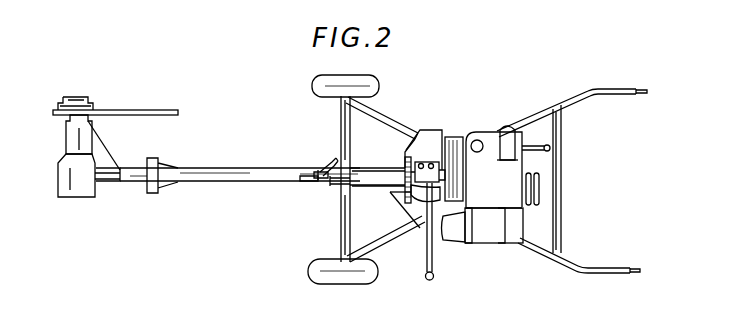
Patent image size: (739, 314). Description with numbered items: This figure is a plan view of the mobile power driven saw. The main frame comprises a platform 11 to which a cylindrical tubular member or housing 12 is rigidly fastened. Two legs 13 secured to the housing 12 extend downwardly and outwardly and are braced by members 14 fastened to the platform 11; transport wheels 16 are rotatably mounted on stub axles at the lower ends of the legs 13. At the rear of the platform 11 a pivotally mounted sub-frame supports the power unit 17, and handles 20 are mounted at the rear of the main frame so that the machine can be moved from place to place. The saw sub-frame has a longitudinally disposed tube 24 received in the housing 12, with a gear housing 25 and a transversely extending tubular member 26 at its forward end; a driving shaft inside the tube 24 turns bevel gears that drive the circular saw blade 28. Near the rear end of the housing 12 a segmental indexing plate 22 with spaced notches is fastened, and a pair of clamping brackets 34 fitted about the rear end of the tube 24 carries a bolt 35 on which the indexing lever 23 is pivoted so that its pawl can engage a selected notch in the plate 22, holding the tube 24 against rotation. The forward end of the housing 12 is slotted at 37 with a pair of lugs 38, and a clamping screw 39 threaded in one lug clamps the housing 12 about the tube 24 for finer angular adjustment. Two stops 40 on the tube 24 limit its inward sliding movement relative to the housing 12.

The platform 11 is at (468, 131).
The cylindrical tubular member or housing 12 is at (377, 175).
The legs 13 is at (342, 111).
The bracing members 14 is at (399, 125).
The transport wheels 16 is at (352, 82).
The power unit 17 is at (483, 213).
The handles 20 is at (566, 99).
The indexing plate 22 is at (406, 158).
The indexing lever 23 is at (434, 273).
The longitudinal tube 24 is at (206, 183).
The gear housing 25 is at (64, 176).
The transversely extending tubular member 26 is at (68, 140).
The circular saw blade 28 is at (98, 113).
The clamping brackets 34 is at (429, 162).
The bolt 35 is at (404, 204).
The slot 37 is at (346, 185).
The lugs 38 is at (317, 171).
The clamping screw 39 is at (330, 160).
The stops 40 is at (302, 186).